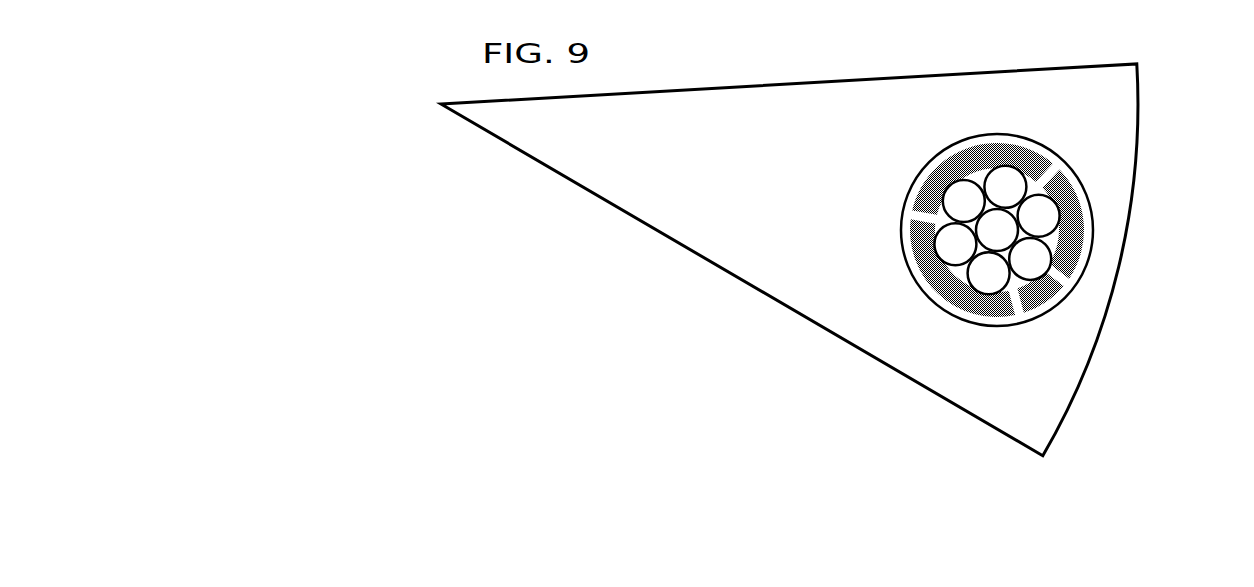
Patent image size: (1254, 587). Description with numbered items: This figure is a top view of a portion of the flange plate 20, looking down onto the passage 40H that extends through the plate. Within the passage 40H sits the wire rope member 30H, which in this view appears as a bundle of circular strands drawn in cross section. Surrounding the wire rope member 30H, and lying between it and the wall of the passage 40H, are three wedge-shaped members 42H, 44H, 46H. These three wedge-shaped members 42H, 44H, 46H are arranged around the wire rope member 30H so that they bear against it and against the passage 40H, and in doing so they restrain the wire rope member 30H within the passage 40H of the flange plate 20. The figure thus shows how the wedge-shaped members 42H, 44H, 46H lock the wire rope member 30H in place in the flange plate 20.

The flange plate 20 is at (787, 183).
The passage 40H is at (1085, 185).
The wedge-shaped member 42H is at (973, 159).
The wedge-shaped member 44H is at (1068, 242).
The wedge-shaped member 46H is at (943, 284).
The wire rope member 30H is at (1036, 265).